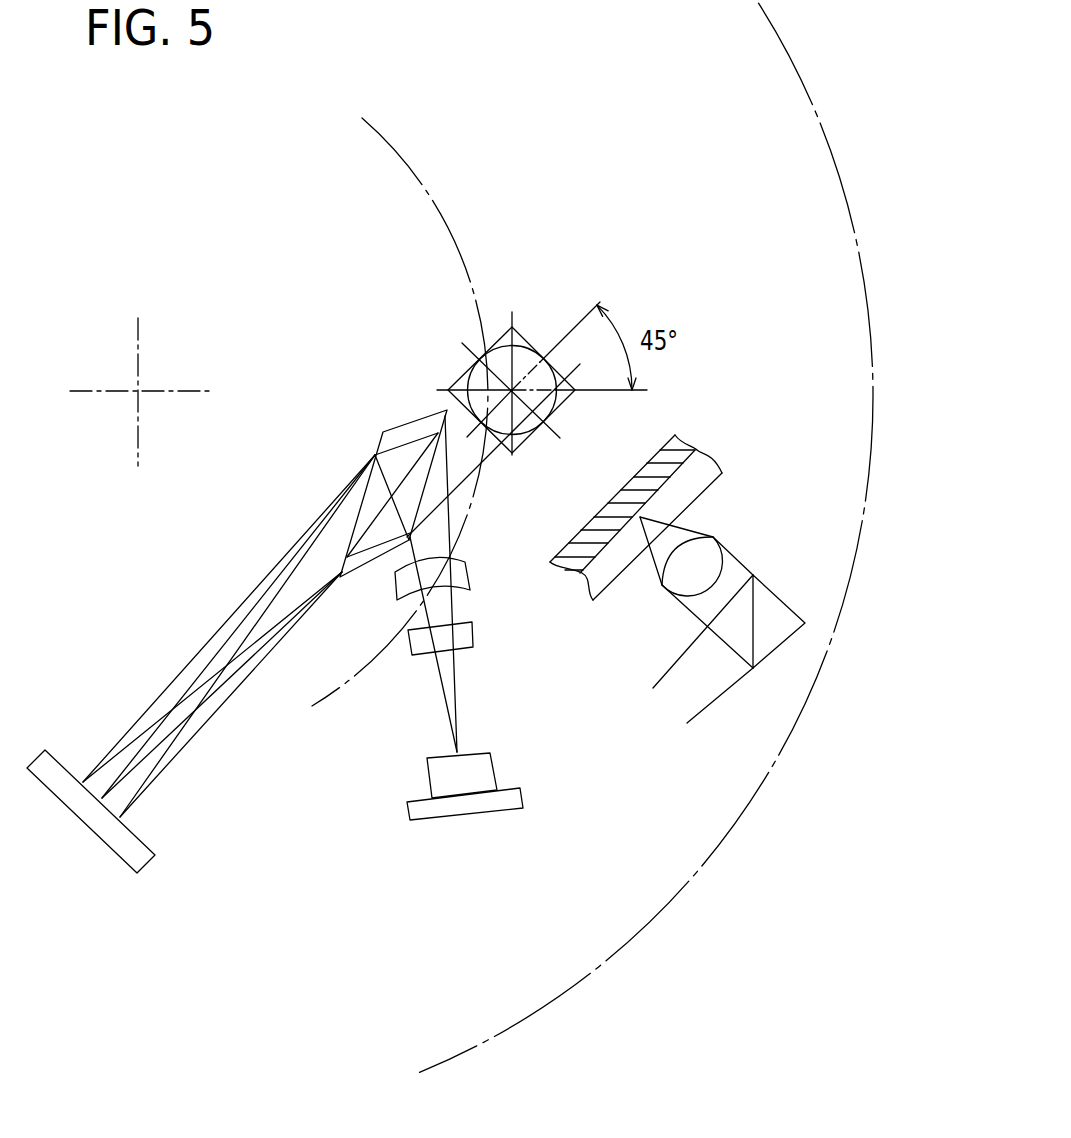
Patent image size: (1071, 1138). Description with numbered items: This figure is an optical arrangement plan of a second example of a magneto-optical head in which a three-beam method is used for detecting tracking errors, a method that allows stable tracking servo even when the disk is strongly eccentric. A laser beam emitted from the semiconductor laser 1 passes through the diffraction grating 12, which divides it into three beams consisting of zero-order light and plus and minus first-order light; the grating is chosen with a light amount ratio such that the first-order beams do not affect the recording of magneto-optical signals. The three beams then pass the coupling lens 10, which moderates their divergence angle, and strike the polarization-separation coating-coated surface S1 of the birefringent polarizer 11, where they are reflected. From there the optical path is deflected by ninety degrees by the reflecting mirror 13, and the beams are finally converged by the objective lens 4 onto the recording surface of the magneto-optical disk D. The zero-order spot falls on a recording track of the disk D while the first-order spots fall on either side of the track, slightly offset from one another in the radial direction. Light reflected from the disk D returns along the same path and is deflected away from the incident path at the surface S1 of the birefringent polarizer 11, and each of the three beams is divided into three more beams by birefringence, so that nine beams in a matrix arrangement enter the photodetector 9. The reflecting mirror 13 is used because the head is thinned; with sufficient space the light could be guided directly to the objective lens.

The semiconductor laser 1 is at (487, 765).
The objective lens 4 is at (518, 355).
The photodetector 9 is at (53, 765).
The coupling lens 10 is at (462, 573).
The birefringent polarizer 11 is at (389, 435).
The diffraction grating 12 is at (467, 635).
The reflecting mirror 13 is at (570, 381).
The polarization-separation coating-coated surface S1 is at (430, 478).
The magneto-optical disk D is at (738, 53).